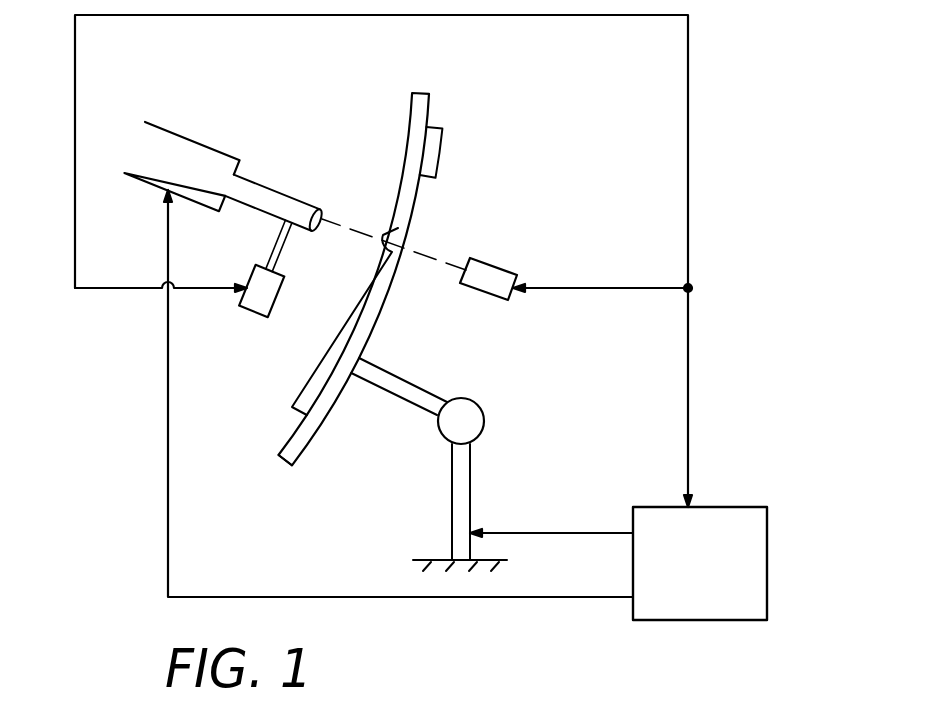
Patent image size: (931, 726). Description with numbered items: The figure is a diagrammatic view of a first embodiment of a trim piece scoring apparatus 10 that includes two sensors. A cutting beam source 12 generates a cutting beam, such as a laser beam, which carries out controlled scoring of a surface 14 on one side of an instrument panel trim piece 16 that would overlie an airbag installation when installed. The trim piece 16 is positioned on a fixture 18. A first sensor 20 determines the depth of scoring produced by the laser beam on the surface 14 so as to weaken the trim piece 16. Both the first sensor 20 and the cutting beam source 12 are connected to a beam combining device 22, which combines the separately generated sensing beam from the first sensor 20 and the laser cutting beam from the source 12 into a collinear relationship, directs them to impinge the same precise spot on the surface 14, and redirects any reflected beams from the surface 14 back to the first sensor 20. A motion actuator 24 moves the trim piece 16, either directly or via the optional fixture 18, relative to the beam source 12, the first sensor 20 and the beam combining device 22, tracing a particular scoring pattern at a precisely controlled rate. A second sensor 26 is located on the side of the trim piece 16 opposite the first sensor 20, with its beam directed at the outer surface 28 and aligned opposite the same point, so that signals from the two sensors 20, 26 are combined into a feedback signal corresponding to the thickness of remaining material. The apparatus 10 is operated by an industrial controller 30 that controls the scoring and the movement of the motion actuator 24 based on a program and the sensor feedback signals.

The trim piece scoring apparatus 10 is at (122, 381).
The cutting beam source 12 is at (180, 121).
The surface 14 is at (397, 193).
The instrument panel trim piece 16 is at (431, 143).
The fixture 18 is at (303, 448).
The first sensor 20 is at (250, 317).
The beam combining device 22 is at (270, 197).
The motion actuator 24 is at (490, 407).
The second sensor 26 is at (494, 261).
The outer surface 28 is at (418, 177).
The industrial controller 30 is at (728, 508).